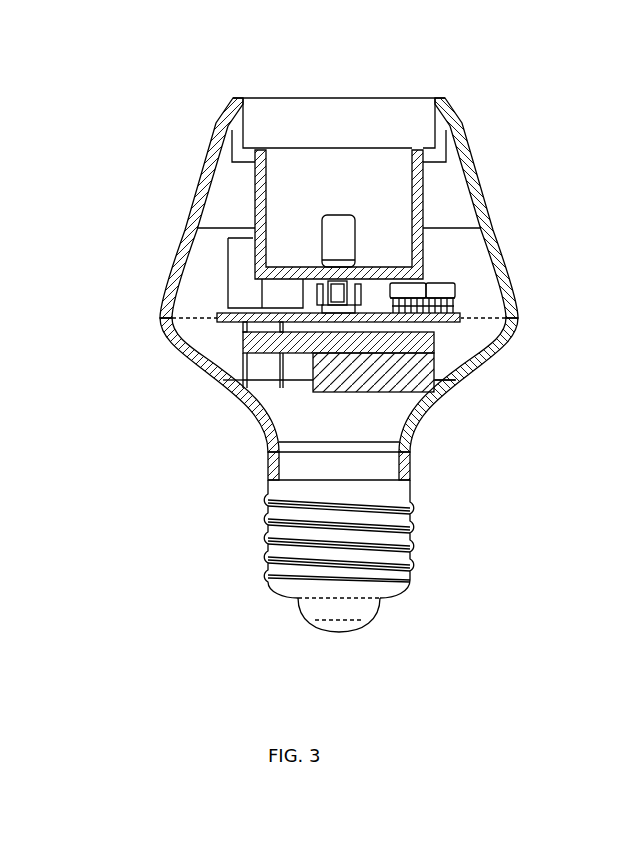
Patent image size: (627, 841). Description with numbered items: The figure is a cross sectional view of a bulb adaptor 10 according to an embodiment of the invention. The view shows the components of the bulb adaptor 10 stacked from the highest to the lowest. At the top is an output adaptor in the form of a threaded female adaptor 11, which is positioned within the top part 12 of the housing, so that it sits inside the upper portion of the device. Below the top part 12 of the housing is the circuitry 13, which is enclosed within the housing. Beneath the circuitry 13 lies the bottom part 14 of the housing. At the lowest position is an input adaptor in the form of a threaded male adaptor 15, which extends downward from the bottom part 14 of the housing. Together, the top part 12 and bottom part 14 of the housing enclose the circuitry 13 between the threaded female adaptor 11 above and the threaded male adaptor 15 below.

The bulb adaptor 10 is at (171, 643).
The threaded female adaptor 11 is at (247, 142).
The top part of housing 12 is at (195, 232).
The circuitry 13 is at (455, 298).
The bottom part of housing 14 is at (200, 375).
The threaded male adaptor 15 is at (270, 545).